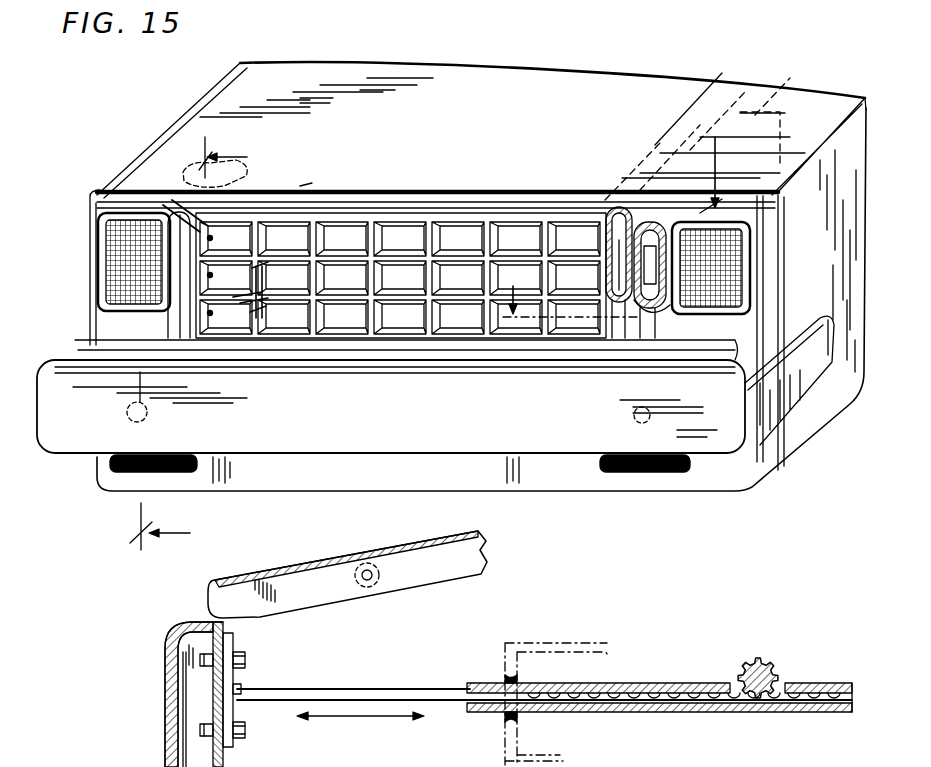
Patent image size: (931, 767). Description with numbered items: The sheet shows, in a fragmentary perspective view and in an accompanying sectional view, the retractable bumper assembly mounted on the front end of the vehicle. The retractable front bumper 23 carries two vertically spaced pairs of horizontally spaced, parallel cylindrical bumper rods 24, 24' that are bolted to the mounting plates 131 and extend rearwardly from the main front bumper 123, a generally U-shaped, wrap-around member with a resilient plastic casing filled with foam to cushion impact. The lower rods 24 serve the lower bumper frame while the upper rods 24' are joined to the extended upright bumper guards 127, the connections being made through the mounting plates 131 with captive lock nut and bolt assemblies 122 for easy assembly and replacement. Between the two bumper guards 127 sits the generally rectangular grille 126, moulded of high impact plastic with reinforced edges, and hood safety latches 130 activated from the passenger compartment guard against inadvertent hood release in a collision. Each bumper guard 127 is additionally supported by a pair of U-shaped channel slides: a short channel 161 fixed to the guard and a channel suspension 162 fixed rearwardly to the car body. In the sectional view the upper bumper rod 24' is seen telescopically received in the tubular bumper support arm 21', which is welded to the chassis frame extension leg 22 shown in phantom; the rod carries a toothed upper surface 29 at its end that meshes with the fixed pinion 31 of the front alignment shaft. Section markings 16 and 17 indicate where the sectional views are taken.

In FIG. 15, the retractable front bumper 23 is at (354, 202).
In FIG. 15, the grille 126 is at (427, 223).
In FIG. 15, the bumper guard 127 is at (173, 311).
In FIG. 16, the bumper guard 127 is at (166, 672).
In FIG. 15, the hood safety latch 130 is at (190, 174).
In FIG. 16, the hood safety latch 130 is at (372, 588).
In FIG. 15, the bumper rod 24 is at (435, 384).
In FIG. 15, the bumper rod 24' is at (450, 185).
In FIG. 16, the bumper rod 24' is at (544, 690).
In FIG. 15, the main front bumper 123 is at (65, 458).
In FIG. 15, the short channel 161 is at (640, 306).
In FIG. 15, the channel suspension 162 is at (700, 311).
In FIG. 16, the captive lock nut and bolt assembly 122 is at (246, 658).
In FIG. 16, the mounting plate 131 is at (247, 736).
In FIG. 16, the chassis frame extension leg 22 is at (579, 614).
In FIG. 16, the bumper support arm 21' is at (659, 722).
In FIG. 16, the toothed upper surface 29 is at (705, 683).
In FIG. 16, the pinion 31 is at (776, 666).
In FIG. 15, the section line 16 is at (241, 157).
In FIG. 15, the section line 17 is at (619, 209).